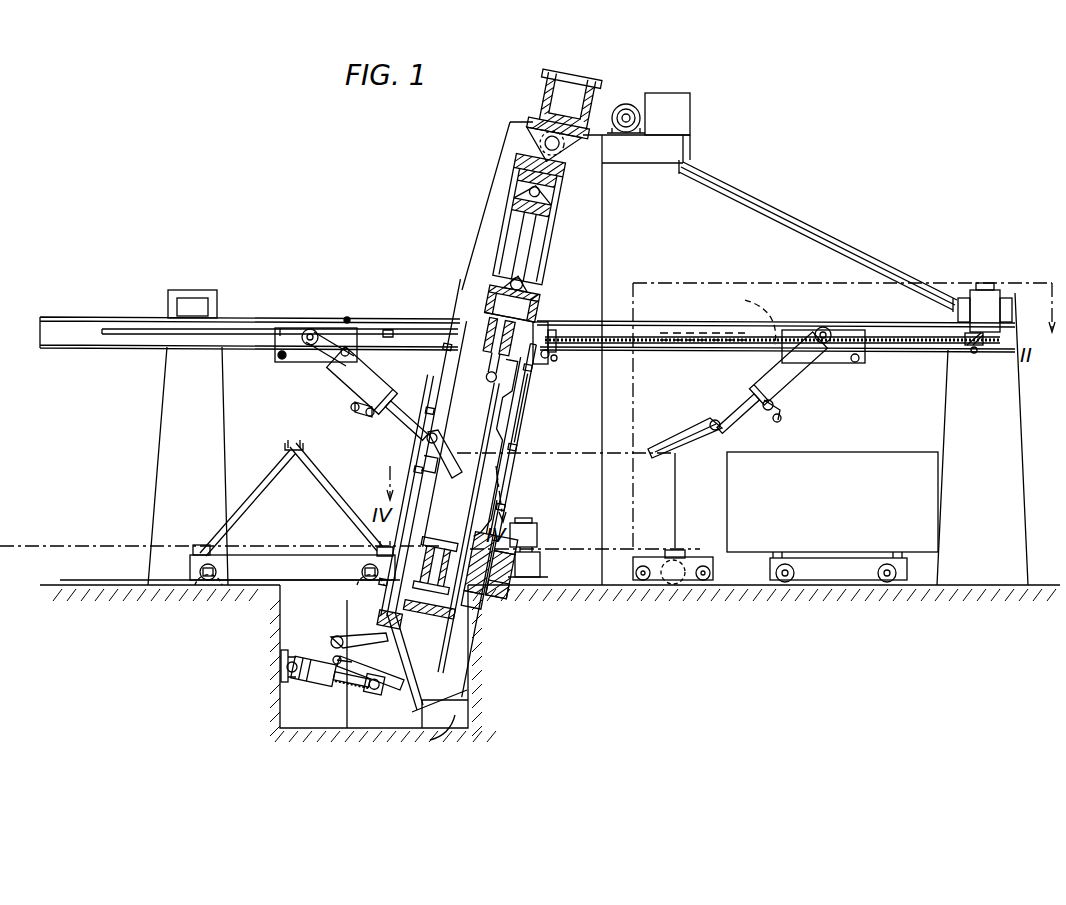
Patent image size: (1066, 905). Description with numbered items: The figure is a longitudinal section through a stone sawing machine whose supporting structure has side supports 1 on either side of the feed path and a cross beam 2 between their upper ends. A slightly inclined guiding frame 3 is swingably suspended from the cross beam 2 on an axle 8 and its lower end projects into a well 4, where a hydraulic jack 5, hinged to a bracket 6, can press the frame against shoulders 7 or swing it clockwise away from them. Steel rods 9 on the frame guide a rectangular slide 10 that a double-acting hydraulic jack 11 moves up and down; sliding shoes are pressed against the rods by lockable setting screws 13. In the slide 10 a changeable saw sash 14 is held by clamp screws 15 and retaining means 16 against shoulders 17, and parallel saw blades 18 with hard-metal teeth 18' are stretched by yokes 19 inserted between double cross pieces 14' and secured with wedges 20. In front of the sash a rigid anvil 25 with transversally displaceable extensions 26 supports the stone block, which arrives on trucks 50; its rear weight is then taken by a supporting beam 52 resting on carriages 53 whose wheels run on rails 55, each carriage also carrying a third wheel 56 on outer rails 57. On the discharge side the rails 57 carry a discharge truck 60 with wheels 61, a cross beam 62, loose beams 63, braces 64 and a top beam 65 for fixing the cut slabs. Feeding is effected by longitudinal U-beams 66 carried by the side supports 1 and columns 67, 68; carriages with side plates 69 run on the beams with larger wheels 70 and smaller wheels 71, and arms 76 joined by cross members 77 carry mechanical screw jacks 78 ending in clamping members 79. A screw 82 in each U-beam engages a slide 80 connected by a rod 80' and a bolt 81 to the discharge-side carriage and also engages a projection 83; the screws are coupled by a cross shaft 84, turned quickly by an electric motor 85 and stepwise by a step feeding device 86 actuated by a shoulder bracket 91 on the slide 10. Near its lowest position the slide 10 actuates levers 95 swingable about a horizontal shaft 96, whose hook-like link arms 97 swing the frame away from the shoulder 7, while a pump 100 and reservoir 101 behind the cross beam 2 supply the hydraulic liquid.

The side supports 1 is at (556, 257).
The cross beam 2 is at (542, 92).
The guiding frame 3 is at (521, 169).
The well 4 is at (388, 712).
The hydraulic jack 5 is at (300, 682).
The bracket 6 is at (286, 656).
The shoulders 7 is at (441, 740).
The axle 8 is at (540, 143).
The steel rods 9 is at (490, 318).
The slide 10 is at (500, 288).
The double-acting hydraulic jack 11 is at (538, 232).
The lockable setting screws 13 is at (412, 478).
The saw sash 14 is at (453, 440).
The double cross pieces 14' is at (531, 579).
The clamp screws 15 is at (465, 640).
The retaining means 16 is at (562, 310).
The shoulders 17 is at (470, 330).
The saw blades 18 is at (521, 442).
The teeth 18' is at (532, 510).
The yokes 19 is at (455, 385).
The wedges 20 is at (470, 302).
The anvil 25 is at (527, 523).
The extensions 26 is at (485, 598).
The trucks 50 is at (830, 582).
The supporting beam 52 is at (672, 550).
The carriages 53 is at (700, 555).
The rails 55 is at (735, 585).
The third wheel 56 is at (672, 586).
The rails 57 is at (112, 580).
The discharge truck 60 is at (275, 556).
The wheels 61 is at (225, 568).
The cross beam 62 is at (200, 546).
The loose beams 63 is at (378, 540).
The braces 64 is at (320, 470).
The beam 65 is at (286, 447).
The U-beams 66 is at (868, 333).
The columns 67 is at (1014, 400).
The columns 68 is at (170, 386).
The side plates 69 is at (342, 346).
The larger wheel 70 is at (306, 330).
The smaller wheels 71 is at (278, 355).
The arms 76 is at (300, 363).
The cross members 77 is at (340, 364).
The mechanical screw jacks 78 is at (384, 372).
The clamping members 79 is at (420, 440).
The slide 80 is at (451, 301).
The rod 80' is at (702, 308).
The bolt 81 is at (349, 316).
The screw 82 is at (702, 346).
The projection 83 is at (760, 312).
The cross shaft 84 is at (978, 353).
The electric motor 85 is at (986, 303).
The step feeding device 86 is at (566, 348).
The shoulder bracket 91 is at (540, 360).
The levers 95 is at (380, 620).
The horizontal shaft 96 is at (330, 644).
The hook-like link arms 97 is at (380, 672).
The pump 100 is at (622, 104).
The reservoir 101 is at (660, 96).